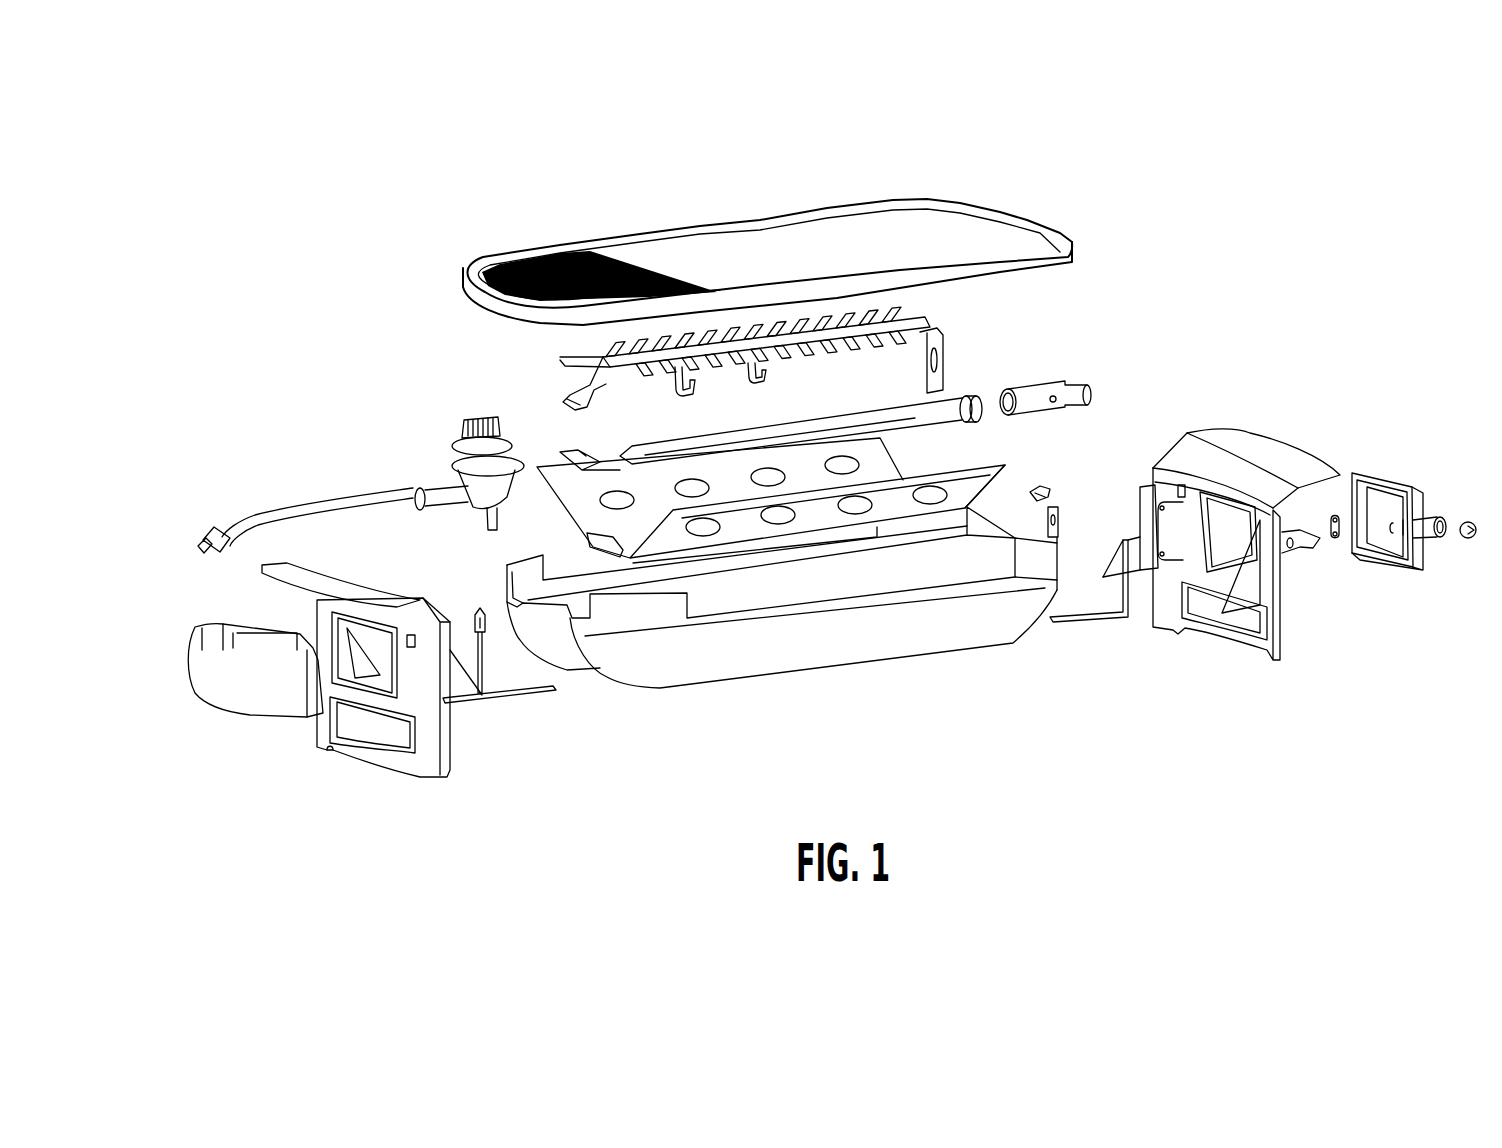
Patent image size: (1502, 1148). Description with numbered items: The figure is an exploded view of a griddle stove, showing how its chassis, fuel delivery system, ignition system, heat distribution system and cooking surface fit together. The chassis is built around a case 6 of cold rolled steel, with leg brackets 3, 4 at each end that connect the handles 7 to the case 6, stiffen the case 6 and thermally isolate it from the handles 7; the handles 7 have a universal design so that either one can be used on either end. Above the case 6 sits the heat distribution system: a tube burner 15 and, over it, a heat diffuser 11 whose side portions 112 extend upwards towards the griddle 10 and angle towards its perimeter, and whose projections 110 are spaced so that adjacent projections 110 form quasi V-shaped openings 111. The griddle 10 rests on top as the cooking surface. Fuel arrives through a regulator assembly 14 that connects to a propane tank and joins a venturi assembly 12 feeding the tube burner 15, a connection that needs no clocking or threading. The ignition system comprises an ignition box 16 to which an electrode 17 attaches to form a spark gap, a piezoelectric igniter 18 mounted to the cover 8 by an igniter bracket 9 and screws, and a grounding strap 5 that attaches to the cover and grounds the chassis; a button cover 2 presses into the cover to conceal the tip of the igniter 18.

The button cover 2 is at (1475, 538).
The leg bracket 3 is at (513, 693).
The leg bracket 4 is at (1093, 617).
The grounding strap 5 is at (1313, 548).
The case 6 is at (857, 667).
The handle 7 is at (1217, 633).
The cover 8 is at (1377, 567).
The igniter bracket 9 is at (1333, 540).
The griddle 10 is at (1073, 252).
The heat diffuser 11 is at (560, 358).
The venturi assembly 12 is at (1067, 383).
The regulator assembly 14 is at (340, 493).
The tube burner 15 is at (980, 393).
The ignition box 16 is at (943, 467).
The electrode 17 is at (990, 482).
The piezoelectric igniter 18 is at (1047, 487).
The projection 110 is at (696, 396).
The opening 111 is at (767, 385).
The side portion 112 is at (597, 377).